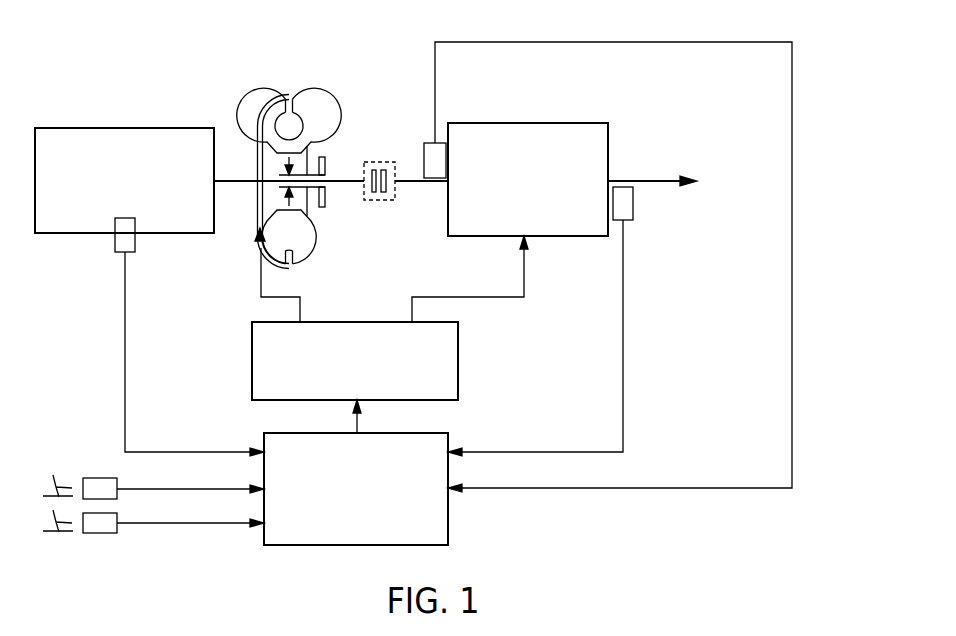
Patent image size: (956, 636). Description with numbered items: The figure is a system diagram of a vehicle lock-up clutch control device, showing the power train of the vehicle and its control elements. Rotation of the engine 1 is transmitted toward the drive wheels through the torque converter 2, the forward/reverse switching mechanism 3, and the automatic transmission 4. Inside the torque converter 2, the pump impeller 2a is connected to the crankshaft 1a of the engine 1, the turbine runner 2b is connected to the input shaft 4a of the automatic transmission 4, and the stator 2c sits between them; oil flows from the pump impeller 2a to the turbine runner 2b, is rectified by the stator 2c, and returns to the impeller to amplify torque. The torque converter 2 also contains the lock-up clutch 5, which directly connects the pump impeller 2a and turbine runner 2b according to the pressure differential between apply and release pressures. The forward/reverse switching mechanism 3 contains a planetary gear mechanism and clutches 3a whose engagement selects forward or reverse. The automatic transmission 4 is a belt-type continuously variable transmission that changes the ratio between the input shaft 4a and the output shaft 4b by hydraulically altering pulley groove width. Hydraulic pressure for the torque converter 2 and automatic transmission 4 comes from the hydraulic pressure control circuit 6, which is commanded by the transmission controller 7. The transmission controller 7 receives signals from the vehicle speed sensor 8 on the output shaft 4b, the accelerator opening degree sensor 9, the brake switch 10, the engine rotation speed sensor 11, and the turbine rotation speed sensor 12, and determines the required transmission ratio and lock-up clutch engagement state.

The engine 1 is at (75, 128).
The crankshaft 1a is at (238, 178).
The torque converter 2 is at (267, 167).
The pump impeller 2a is at (298, 110).
The turbine runner 2b is at (272, 110).
The stator 2c is at (296, 134).
The forward/reverse switching mechanism 3 is at (377, 154).
The clutches 3a is at (371, 159).
The automatic transmission 4 is at (560, 123).
The input shaft 4a is at (420, 183).
The output shaft 4b is at (650, 181).
The lock-up clutch 5 is at (262, 196).
The hydraulic pressure control circuit 6 is at (458, 358).
The transmission controller 7 is at (448, 513).
The vehicle speed sensor 8 is at (634, 210).
The accelerator opening degree sensor 9 is at (100, 478).
The brake switch 10 is at (100, 533).
The engine rotation speed sensor 11 is at (115, 232).
The turbine rotation speed sensor 12 is at (433, 143).